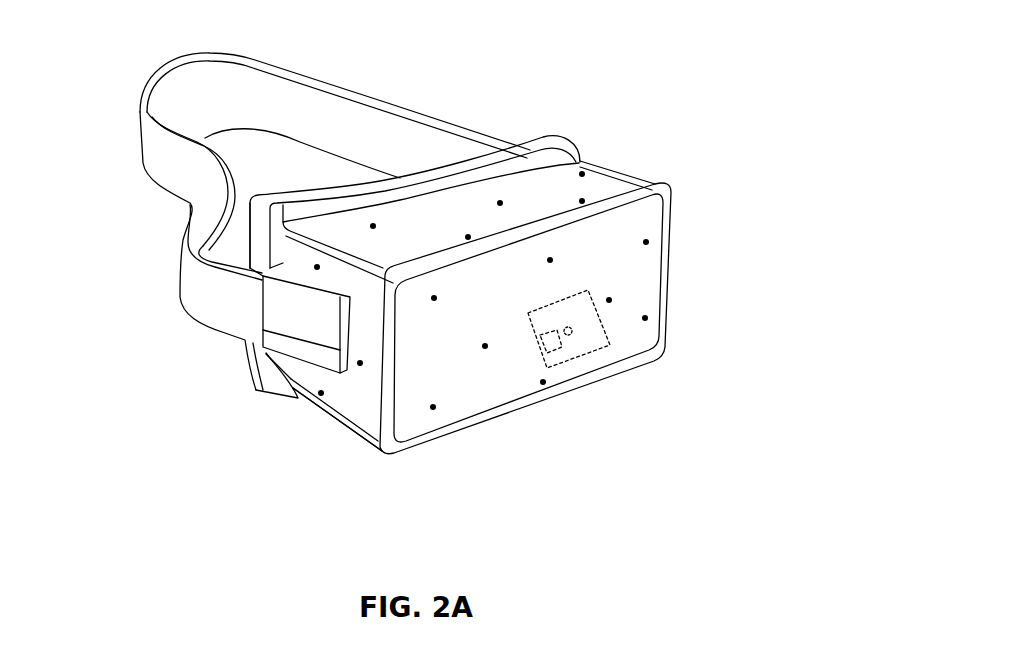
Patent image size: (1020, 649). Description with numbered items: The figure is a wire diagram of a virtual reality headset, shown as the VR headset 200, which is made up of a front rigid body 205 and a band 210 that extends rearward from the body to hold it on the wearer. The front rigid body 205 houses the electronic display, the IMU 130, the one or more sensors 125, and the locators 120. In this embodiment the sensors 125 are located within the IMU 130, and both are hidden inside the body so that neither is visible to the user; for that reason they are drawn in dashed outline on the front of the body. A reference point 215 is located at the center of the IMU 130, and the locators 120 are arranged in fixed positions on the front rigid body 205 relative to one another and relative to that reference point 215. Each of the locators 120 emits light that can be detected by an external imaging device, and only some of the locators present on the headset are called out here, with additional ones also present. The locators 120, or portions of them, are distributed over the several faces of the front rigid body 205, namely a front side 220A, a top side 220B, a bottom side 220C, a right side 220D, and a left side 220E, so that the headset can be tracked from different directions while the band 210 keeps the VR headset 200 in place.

The VR headset 200 is at (33, 53).
The band 210 is at (412, 118).
The front rigid body 205 is at (673, 186).
The front side 220A is at (421, 426).
The top side 220B is at (318, 227).
The bottom side 220C is at (318, 427).
The right side 220D is at (353, 393).
The left side 220E is at (647, 177).
The locators 120 is at (624, 295).
The IMU 130 is at (613, 345).
The sensors 125 is at (547, 348).
The reference point 215 is at (571, 336).